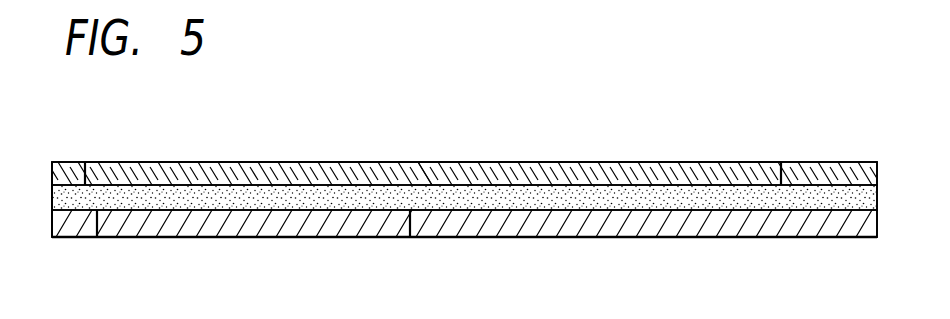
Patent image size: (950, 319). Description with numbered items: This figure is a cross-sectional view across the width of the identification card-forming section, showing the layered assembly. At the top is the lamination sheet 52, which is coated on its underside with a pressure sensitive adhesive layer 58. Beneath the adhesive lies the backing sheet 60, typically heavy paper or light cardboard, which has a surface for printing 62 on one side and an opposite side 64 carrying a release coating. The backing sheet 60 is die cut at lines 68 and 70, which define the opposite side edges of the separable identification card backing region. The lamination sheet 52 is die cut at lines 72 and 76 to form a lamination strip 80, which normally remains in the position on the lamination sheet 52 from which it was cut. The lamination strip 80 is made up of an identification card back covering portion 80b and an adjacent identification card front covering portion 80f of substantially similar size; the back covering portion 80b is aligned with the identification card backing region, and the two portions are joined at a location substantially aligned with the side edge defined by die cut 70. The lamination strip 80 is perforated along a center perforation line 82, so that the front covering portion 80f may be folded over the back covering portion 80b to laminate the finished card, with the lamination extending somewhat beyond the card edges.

The lamination sheet 52 is at (290, 172).
The pressure sensitive adhesive layer 58 is at (860, 195).
The backing sheet 60 is at (250, 249).
The surface for printing 62 is at (557, 238).
The opposite side of the backing sheet 64 is at (62, 210).
The die cut 68 is at (99, 222).
The die cut 70 is at (409, 218).
The die cut 72 is at (86, 172).
The die cut 76 is at (800, 163).
The lamination strip 80 is at (172, 144).
The identification card back covering portion 80b is at (238, 163).
The identification card front covering portion 80f is at (607, 172).
The perforation line 82 is at (428, 173).